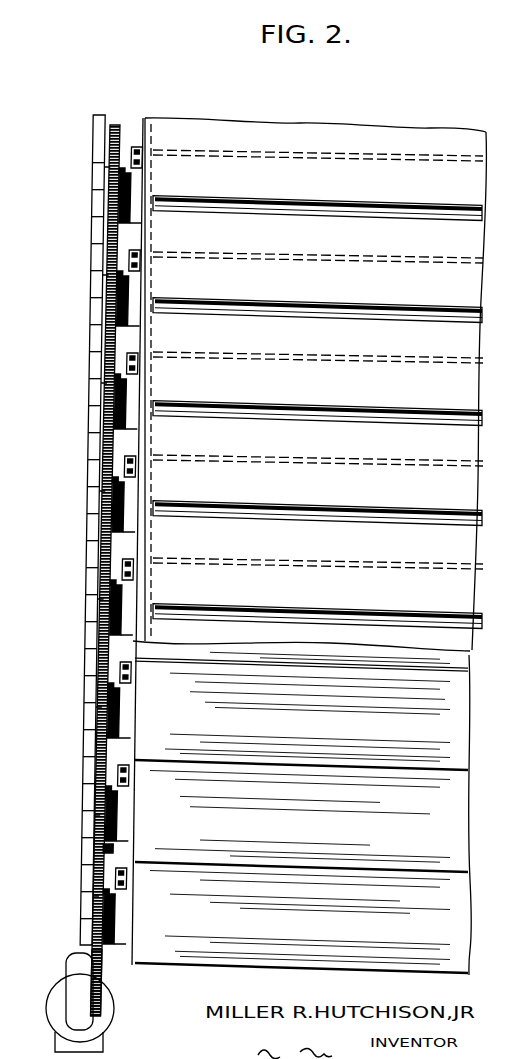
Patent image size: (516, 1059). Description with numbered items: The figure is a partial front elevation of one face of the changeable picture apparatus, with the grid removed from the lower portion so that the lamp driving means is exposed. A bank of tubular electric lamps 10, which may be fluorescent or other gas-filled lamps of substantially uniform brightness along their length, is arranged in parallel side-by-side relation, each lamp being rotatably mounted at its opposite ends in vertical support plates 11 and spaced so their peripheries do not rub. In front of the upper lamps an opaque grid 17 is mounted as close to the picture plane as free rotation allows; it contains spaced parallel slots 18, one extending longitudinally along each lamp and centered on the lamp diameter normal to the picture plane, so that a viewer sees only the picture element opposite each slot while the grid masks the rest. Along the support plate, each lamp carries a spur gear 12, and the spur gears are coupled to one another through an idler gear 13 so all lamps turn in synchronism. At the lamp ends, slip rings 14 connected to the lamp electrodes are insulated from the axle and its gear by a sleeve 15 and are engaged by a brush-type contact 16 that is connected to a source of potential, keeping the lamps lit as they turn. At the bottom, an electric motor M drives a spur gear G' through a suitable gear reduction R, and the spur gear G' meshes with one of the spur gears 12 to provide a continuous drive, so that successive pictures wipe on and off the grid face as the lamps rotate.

The tubular electric lamps 10 is at (158, 958).
The vertical support plates 11 is at (101, 117).
The spur gear 12 is at (111, 283).
The idler gear 13 is at (113, 745).
The slip rings 14 is at (123, 852).
The sleeve 15 is at (133, 398).
The brush-type contact 16 is at (145, 484).
The opaque grid 17 is at (232, 130).
The slots 18 is at (344, 192).
The spur gear G' is at (114, 983).
The gear reduction R is at (76, 1010).
The electric motor M is at (60, 1028).